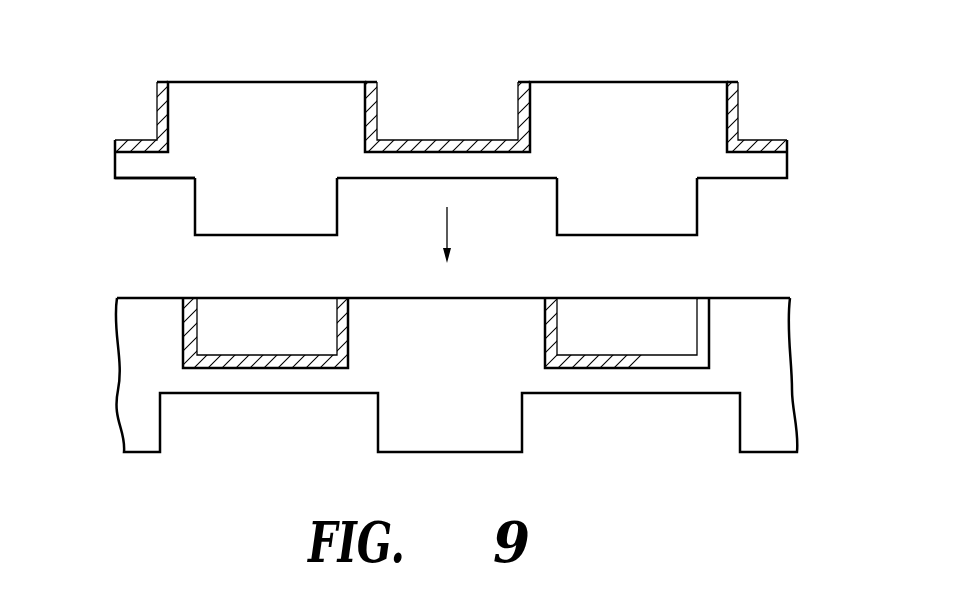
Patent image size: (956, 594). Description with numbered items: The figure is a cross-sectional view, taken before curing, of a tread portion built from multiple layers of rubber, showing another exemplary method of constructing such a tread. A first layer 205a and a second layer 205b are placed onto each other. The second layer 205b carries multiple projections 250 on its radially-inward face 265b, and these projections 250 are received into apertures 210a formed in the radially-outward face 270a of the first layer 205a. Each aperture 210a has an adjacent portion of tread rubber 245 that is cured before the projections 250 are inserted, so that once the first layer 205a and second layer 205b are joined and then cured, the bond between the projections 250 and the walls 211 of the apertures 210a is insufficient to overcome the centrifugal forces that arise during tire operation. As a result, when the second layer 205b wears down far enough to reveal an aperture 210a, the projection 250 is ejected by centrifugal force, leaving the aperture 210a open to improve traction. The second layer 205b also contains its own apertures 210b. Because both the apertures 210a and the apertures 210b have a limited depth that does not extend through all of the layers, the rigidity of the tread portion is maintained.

The aperture 210b is at (411, 139).
The second layer 205b is at (630, 98).
The tread rubber 245 is at (527, 115).
The projection 250 is at (210, 203).
The radially-inward face 265b is at (137, 178).
The aperture 210a is at (443, 378).
The first layer 205a is at (780, 420).
The radially-outward face 270a is at (137, 291).
The walls of apertures 211 is at (196, 328).